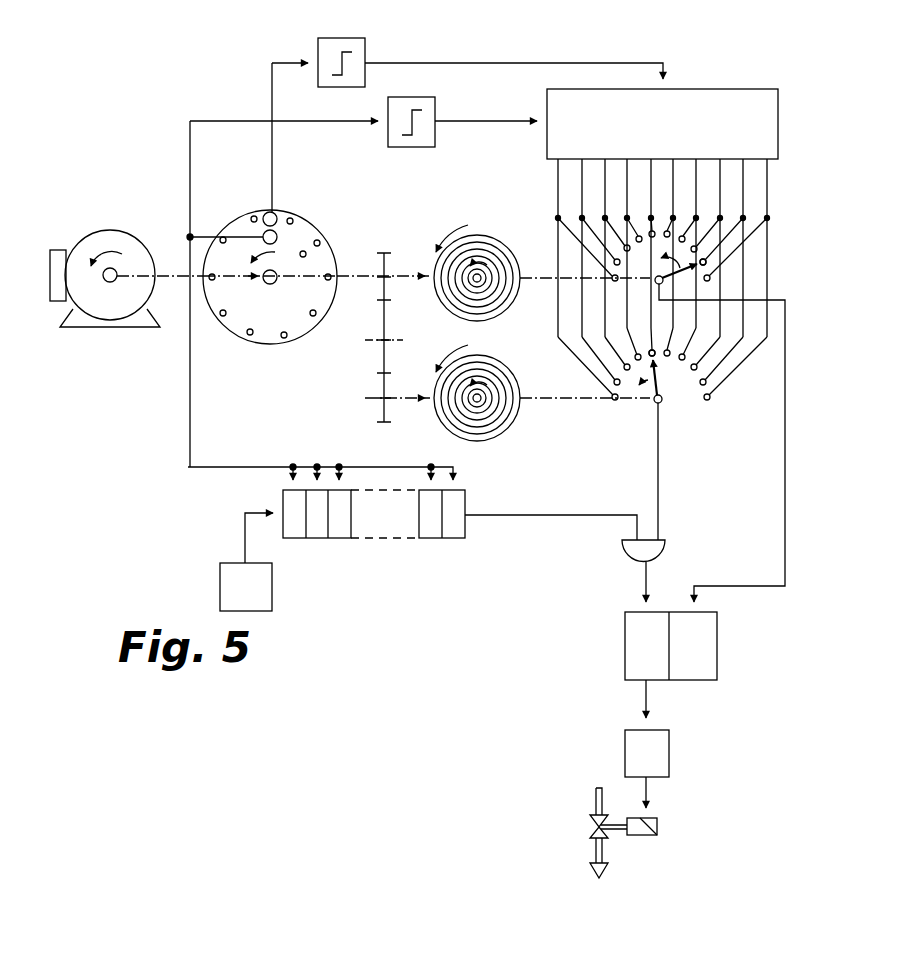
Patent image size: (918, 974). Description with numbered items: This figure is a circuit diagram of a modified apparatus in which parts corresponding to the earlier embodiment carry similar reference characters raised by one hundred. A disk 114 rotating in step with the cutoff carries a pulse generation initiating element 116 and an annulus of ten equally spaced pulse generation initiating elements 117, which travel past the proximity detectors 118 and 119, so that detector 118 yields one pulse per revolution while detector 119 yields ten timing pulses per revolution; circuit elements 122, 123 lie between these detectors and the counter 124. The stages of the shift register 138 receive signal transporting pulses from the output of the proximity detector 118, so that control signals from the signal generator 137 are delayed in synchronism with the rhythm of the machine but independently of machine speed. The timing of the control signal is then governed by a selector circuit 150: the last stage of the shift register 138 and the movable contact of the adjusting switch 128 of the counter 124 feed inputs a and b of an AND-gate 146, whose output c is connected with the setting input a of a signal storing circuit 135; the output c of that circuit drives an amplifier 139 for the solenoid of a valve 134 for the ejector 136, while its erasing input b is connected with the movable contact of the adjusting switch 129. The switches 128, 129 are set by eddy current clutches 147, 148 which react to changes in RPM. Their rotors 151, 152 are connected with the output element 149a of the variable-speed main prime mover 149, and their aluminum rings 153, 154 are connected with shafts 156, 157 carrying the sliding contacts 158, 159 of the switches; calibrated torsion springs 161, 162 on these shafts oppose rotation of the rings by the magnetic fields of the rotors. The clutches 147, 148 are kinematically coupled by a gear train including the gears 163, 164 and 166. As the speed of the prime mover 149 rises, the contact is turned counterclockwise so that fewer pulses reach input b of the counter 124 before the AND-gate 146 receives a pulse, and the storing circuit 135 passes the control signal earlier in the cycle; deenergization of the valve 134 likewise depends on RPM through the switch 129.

The disk 114 is at (270, 344).
The pulse generation initiating element 116 is at (306, 252).
The pulse generation initiating elements 117 is at (248, 334).
The proximity detector 118 is at (277, 235).
The second proximity detector 119 is at (277, 215).
The threshold circuit 122 is at (432, 104).
The threshold circuit 123 is at (365, 43).
The counter 124 is at (677, 133).
The adjusting switch 128 is at (643, 428).
The adjusting switch 129 is at (640, 308).
The valve 134 is at (620, 802).
The signal storing circuit 135 is at (717, 680).
The ejector 136 is at (592, 863).
The signal generator 137 is at (258, 597).
The shift register 138 is at (334, 549).
The amplifier 139 is at (669, 753).
The AND-gate 146 is at (622, 552).
The eddy current clutch 147 is at (520, 438).
The eddy current clutch 148 is at (491, 216).
The variable-speed main prime mover 149 is at (105, 312).
The output element 149a is at (166, 276).
The selector circuit 150 is at (721, 440).
The rotor 151 is at (492, 434).
The rotor 152 is at (490, 262).
The aluminum ring 153 is at (520, 414).
The aluminum ring 154 is at (507, 312).
The shaft 156 is at (485, 397).
The shaft 157 is at (470, 285).
The sliding contact 158 is at (664, 386).
The sliding contact 159 is at (696, 270).
The calibrated torsion spring 161 is at (463, 405).
The calibrated torsion spring 162 is at (472, 300).
The gear 163 is at (384, 416).
The gear 164 is at (384, 357).
The gear 166 is at (384, 298).